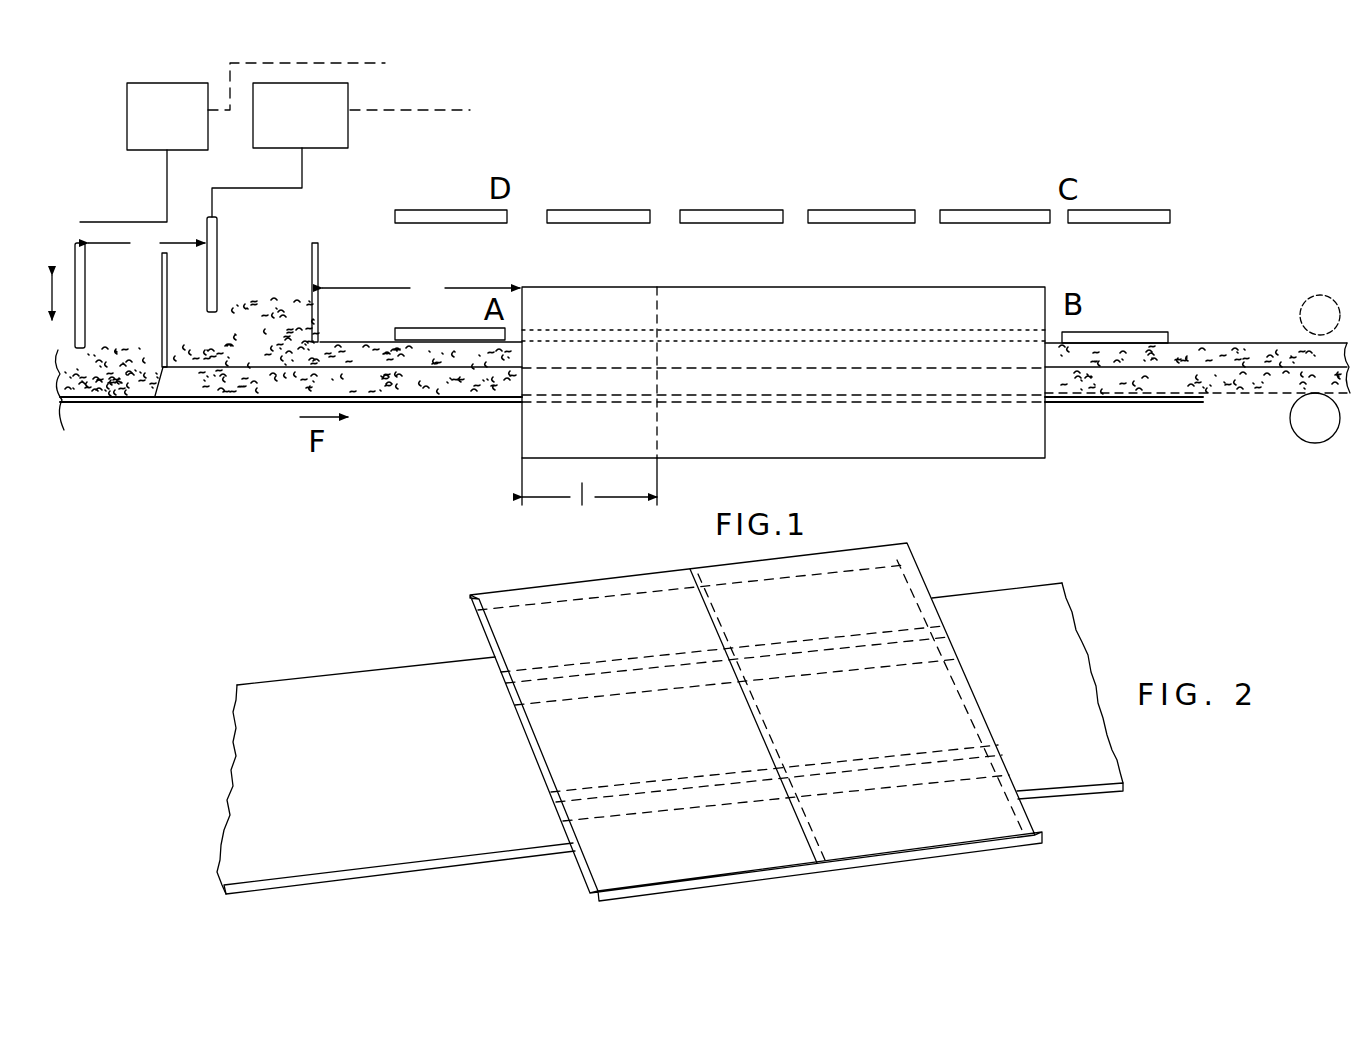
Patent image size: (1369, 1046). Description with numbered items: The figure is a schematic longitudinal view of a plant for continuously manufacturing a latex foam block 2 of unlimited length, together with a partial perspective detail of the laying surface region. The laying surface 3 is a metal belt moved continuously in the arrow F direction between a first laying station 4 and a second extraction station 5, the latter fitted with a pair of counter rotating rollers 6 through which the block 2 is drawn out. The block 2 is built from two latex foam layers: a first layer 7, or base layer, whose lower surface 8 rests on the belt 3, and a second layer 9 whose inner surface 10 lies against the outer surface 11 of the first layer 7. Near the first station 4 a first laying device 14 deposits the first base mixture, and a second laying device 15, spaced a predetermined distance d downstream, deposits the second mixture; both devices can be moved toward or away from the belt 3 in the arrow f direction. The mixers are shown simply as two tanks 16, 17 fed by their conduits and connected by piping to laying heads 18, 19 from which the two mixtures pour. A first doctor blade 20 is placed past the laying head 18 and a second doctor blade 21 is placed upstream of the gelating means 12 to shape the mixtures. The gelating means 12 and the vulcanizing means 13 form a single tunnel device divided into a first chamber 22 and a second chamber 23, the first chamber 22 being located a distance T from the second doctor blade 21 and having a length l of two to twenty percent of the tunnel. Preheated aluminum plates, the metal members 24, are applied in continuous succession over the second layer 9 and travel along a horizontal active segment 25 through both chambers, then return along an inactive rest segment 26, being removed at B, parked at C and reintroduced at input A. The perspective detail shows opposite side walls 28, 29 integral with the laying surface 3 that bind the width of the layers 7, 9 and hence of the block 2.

In FIG. 1, the latex foam block 2 is at (1210, 331).
In FIG. 1, the laying surface 3 is at (400, 403).
In FIG. 2, the laying surface 3 is at (670, 738).
In FIG. 1, the first laying station 4 is at (84, 221).
In FIG. 1, the second extraction station 5 is at (1287, 409).
In FIG. 1, the counter rotating rollers 6 is at (1325, 310).
In FIG. 1, the first layer 7 is at (313, 380).
In FIG. 1, the lower surface 8 is at (1113, 397).
In FIG. 1, the second layer 9 is at (480, 348).
In FIG. 1, the inner surface 10 is at (1175, 367).
In FIG. 1, the outer surface 11 is at (1193, 367).
In FIG. 1, the gelating means 12 is at (618, 300).
In FIG. 1, the vulcanizing means 13 is at (783, 372).
In FIG. 1, the first laying device 14 is at (85, 308).
In FIG. 1, the second laying device 15 is at (217, 273).
In FIG. 1, the tank 16 is at (257, 142).
In FIG. 1, the tank 17 is at (378, 149).
In FIG. 1, the laying head 18 is at (80, 348).
In FIG. 1, the laying head 19 is at (210, 312).
In FIG. 1, the first doctor blade 20 is at (163, 367).
In FIG. 1, the second doctor blade 21 is at (310, 270).
In FIG. 1, the first chamber 22 is at (589, 462).
In FIG. 1, the second chamber 23 is at (802, 437).
In FIG. 1, the preheated metal members 24 is at (843, 218).
In FIG. 2, the preheated metal members 24 is at (756, 722).
In FIG. 1, the active segment 25 is at (697, 330).
In FIG. 1, the inactive rest segment 26 is at (797, 208).
In FIG. 2, the side wall 28 is at (678, 687).
In FIG. 2, the side wall 29 is at (710, 783).